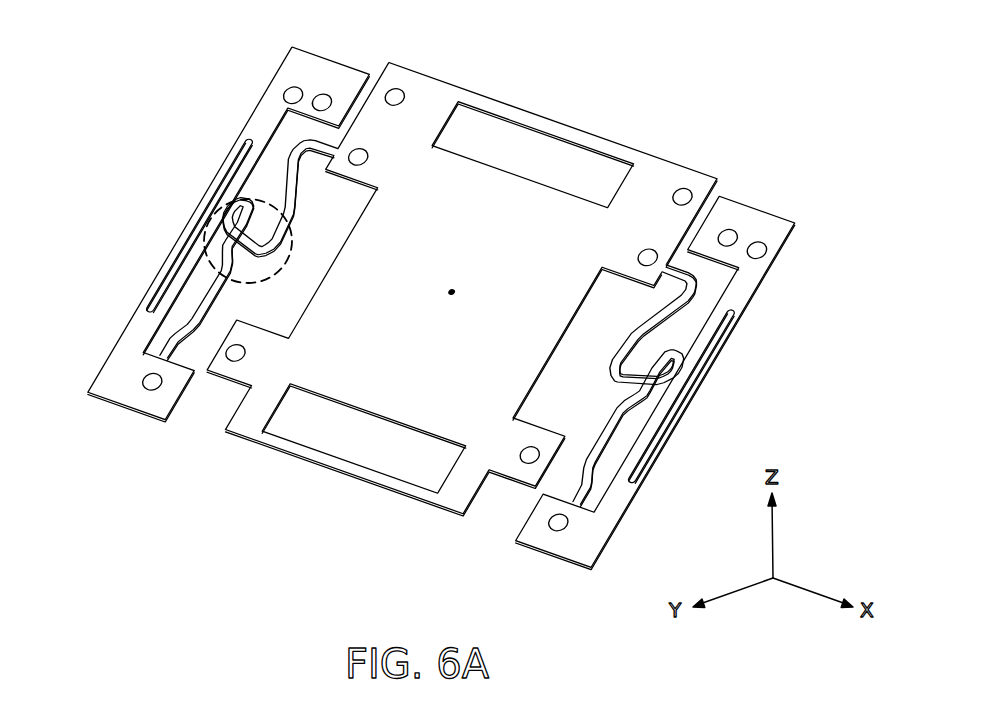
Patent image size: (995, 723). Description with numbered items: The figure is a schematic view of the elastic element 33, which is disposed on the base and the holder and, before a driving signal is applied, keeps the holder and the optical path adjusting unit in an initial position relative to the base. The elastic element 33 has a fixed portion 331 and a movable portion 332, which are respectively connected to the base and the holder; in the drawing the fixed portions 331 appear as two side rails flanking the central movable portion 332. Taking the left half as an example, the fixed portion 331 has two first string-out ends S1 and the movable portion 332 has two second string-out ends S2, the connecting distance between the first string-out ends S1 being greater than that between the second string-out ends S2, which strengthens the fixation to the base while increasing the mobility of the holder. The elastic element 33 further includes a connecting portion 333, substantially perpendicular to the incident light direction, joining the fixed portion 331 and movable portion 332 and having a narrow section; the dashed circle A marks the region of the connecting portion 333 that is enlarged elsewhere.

The elastic element 33 is at (80, 27).
The fixed portion 331 is at (431, 308).
The movable portion 332 is at (439, 98).
The connecting portion 333 is at (412, 286).
The enlarged region A is at (235, 199).
The first string-out ends S1 is at (310, 117).
The second string-out ends S2 is at (337, 150).